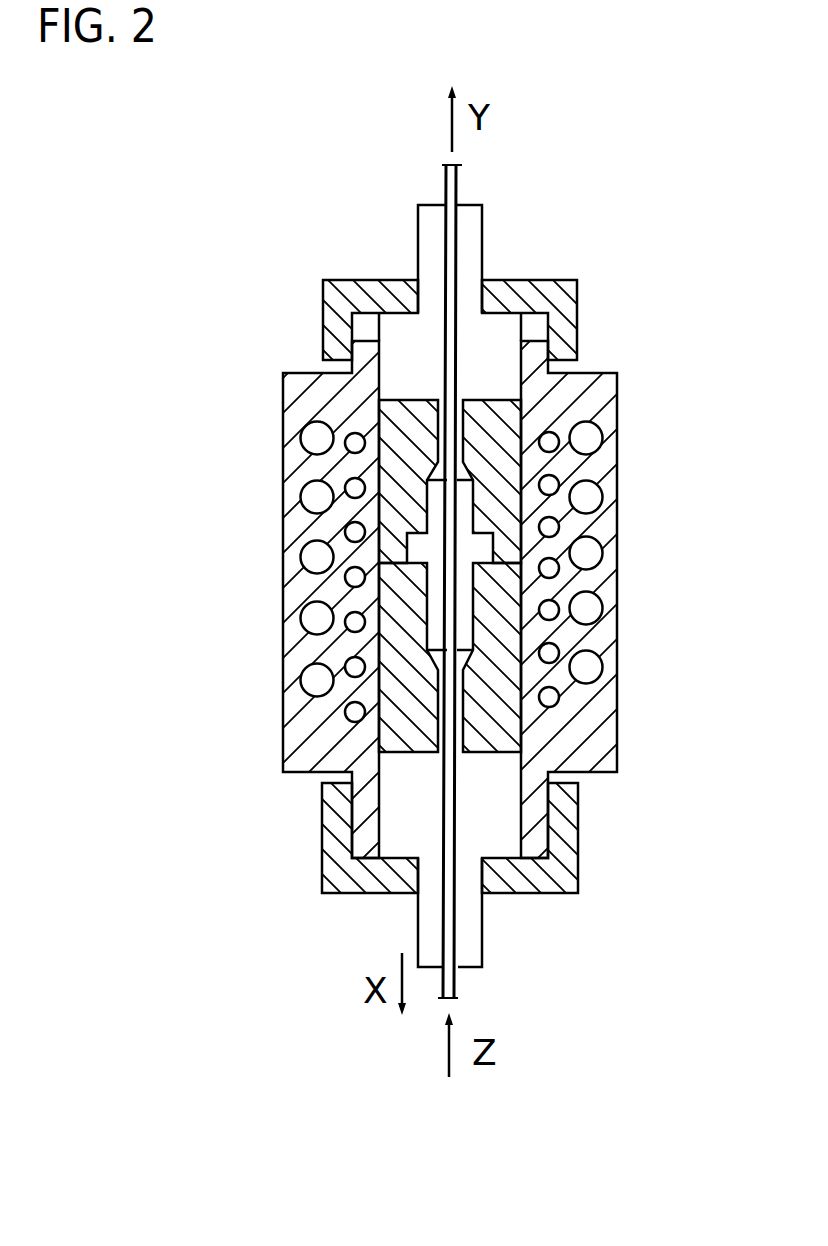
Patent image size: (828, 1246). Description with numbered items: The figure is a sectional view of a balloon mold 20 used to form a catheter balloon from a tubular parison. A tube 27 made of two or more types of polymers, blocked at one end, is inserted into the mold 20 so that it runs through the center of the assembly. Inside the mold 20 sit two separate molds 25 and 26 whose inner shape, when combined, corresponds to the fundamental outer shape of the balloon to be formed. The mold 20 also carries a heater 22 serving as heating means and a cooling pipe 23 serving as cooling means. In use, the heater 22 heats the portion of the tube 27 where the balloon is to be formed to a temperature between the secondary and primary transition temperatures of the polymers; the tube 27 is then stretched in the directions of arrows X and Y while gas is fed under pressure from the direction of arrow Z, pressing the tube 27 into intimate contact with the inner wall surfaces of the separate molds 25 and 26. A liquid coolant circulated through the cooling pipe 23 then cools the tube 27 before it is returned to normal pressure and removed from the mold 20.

The mold 20 is at (247, 793).
The heater 22 is at (554, 527).
The cooling pipe 23 is at (597, 610).
The separate mold 25 is at (512, 422).
The separate mold 26 is at (507, 740).
The tube 27 is at (456, 176).